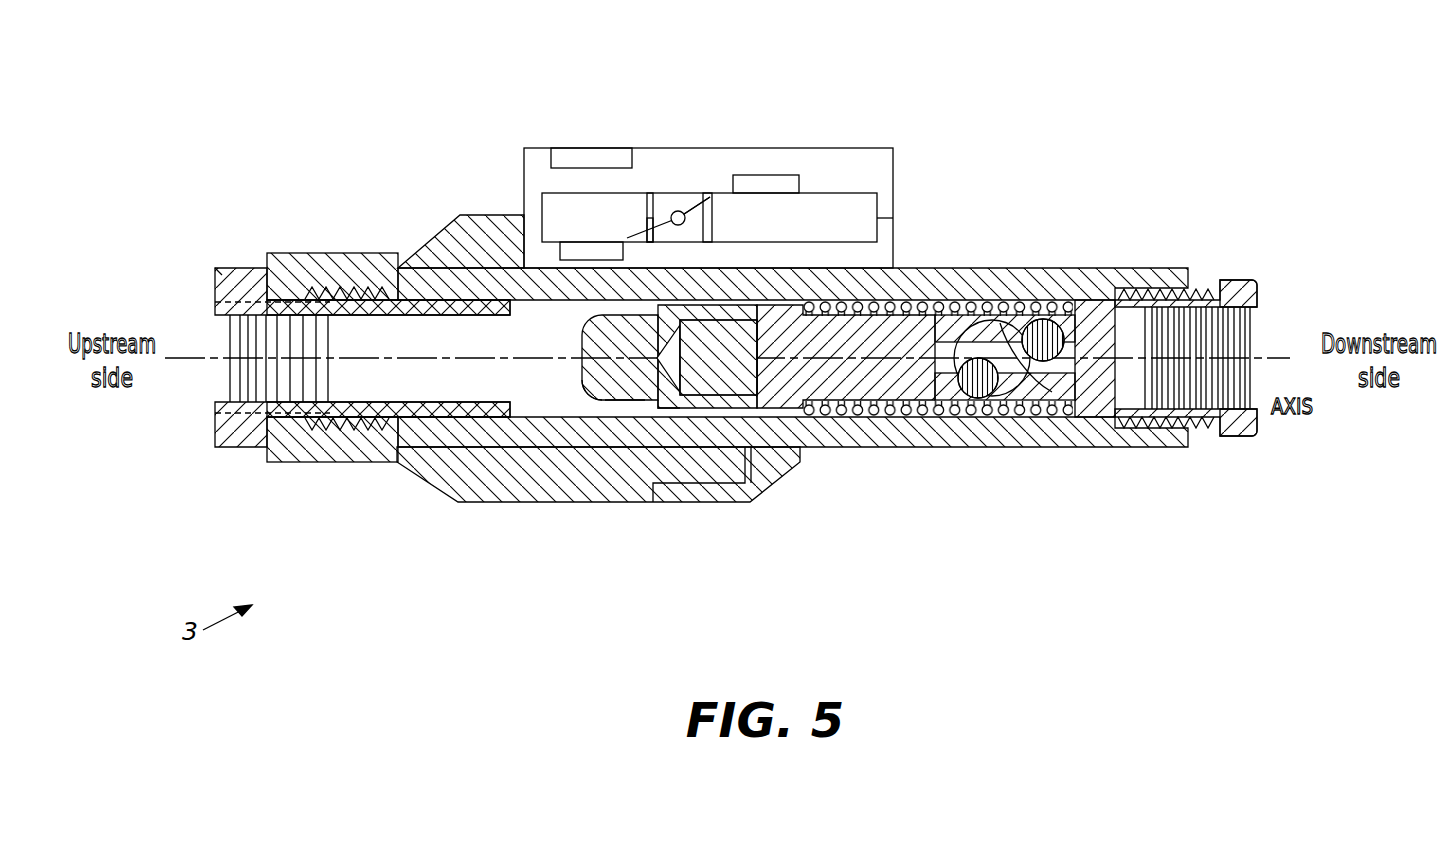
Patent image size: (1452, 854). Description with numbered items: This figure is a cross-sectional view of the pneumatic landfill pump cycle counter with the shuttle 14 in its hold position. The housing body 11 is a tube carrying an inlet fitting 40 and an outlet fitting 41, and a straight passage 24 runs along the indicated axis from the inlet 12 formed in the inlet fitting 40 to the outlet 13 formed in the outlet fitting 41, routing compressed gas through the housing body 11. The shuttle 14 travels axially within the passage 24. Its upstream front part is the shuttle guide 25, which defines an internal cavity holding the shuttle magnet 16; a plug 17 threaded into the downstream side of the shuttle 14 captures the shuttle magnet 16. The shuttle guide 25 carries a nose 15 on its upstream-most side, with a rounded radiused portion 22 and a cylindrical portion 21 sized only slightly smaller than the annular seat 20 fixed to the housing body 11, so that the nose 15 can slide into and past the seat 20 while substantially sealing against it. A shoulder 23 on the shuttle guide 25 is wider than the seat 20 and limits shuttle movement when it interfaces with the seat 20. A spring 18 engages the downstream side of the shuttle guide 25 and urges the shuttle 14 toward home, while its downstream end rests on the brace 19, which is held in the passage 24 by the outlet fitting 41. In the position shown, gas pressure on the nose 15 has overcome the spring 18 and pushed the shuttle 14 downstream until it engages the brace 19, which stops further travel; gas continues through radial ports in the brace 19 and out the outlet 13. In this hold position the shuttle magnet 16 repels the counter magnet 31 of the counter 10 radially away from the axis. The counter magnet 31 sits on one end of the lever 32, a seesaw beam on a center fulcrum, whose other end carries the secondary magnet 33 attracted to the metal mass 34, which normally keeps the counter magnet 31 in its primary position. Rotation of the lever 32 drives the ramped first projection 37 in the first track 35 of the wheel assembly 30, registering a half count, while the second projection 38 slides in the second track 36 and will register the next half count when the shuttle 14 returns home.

The counter 10 is at (710, 161).
The housing body 11 is at (993, 273).
The inlet 12 is at (218, 414).
The outlet 13 is at (1220, 400).
The shuttle 14 is at (765, 402).
The nose 15 is at (582, 368).
The shuttle magnet 16 is at (713, 380).
The plug 17 is at (838, 382).
The spring 18 is at (908, 400).
The brace 19 is at (1012, 398).
The seat 20 is at (510, 307).
The cylindrical portion 21 is at (614, 402).
The radiused portion 22 is at (586, 396).
The shoulder 23 is at (657, 406).
The passage 24 is at (368, 335).
The shuttle guide 25 is at (780, 414).
The wheel assembly 30 is at (813, 195).
The counter magnet 31 is at (767, 187).
The lever 32 is at (678, 211).
The secondary magnet 33 is at (590, 252).
The metal mass 34 is at (592, 153).
The first track 35 is at (712, 195).
The second track 36 is at (648, 200).
The first projection 37 is at (705, 200).
The second projection 38 is at (655, 230).
The inlet fitting 40 is at (1050, 322).
The outlet fitting 41 is at (1236, 436).